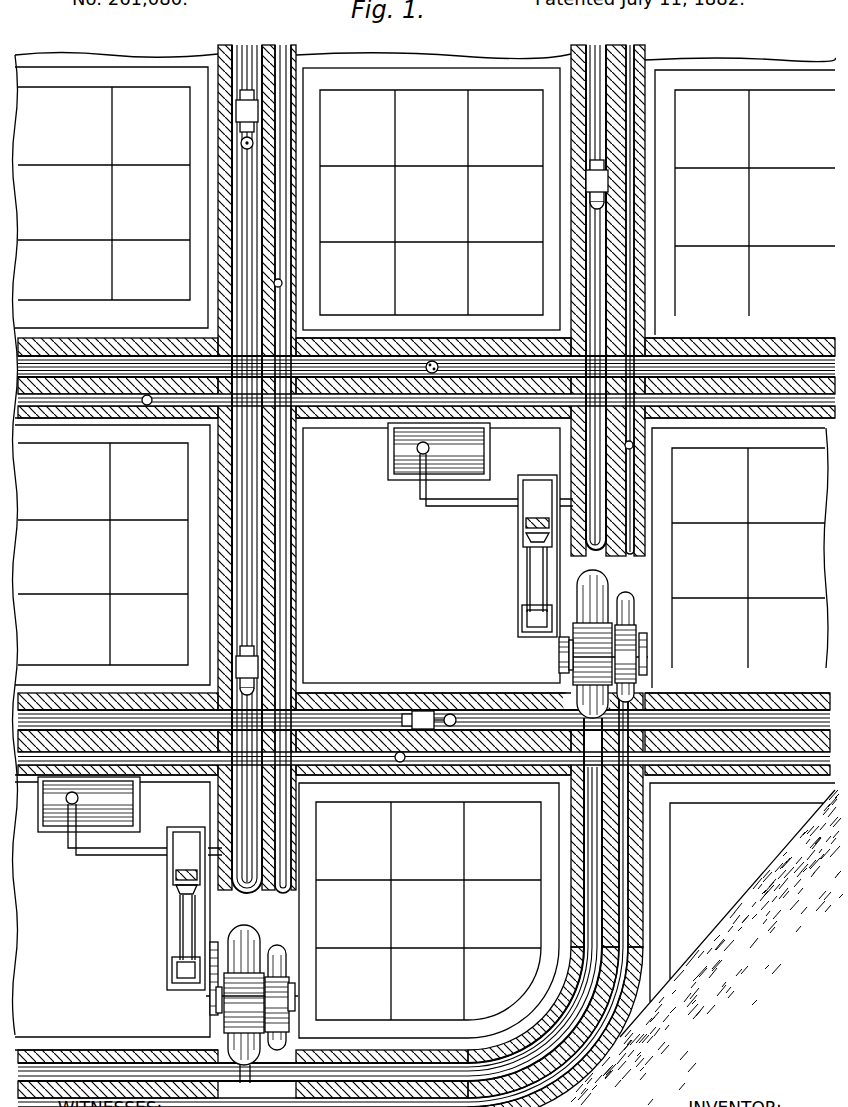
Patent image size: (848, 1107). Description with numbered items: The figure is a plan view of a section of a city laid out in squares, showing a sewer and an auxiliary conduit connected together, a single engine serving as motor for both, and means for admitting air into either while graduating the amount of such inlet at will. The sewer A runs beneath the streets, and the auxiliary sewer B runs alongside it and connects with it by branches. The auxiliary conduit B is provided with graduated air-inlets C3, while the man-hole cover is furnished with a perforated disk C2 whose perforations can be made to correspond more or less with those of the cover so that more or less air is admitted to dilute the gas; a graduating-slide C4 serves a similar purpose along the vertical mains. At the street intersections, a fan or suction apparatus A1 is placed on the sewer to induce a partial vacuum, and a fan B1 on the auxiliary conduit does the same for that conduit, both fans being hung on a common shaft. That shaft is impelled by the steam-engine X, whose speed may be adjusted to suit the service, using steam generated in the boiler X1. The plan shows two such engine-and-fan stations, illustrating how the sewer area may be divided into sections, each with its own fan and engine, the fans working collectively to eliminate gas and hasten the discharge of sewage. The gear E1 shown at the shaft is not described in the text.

The sewer A is at (590, 857).
The auxiliary sewer B is at (626, 852).
The graduating-slide C4 is at (594, 186).
The graduated air-inlets C3 is at (282, 283).
The perforated disk C2 is at (432, 361).
The steam-engine X is at (512, 478).
The boiler X1 is at (420, 496).
The fan or suction apparatus A1 is at (246, 912).
The fan B1 is at (622, 596).
The gear E1 is at (290, 998).